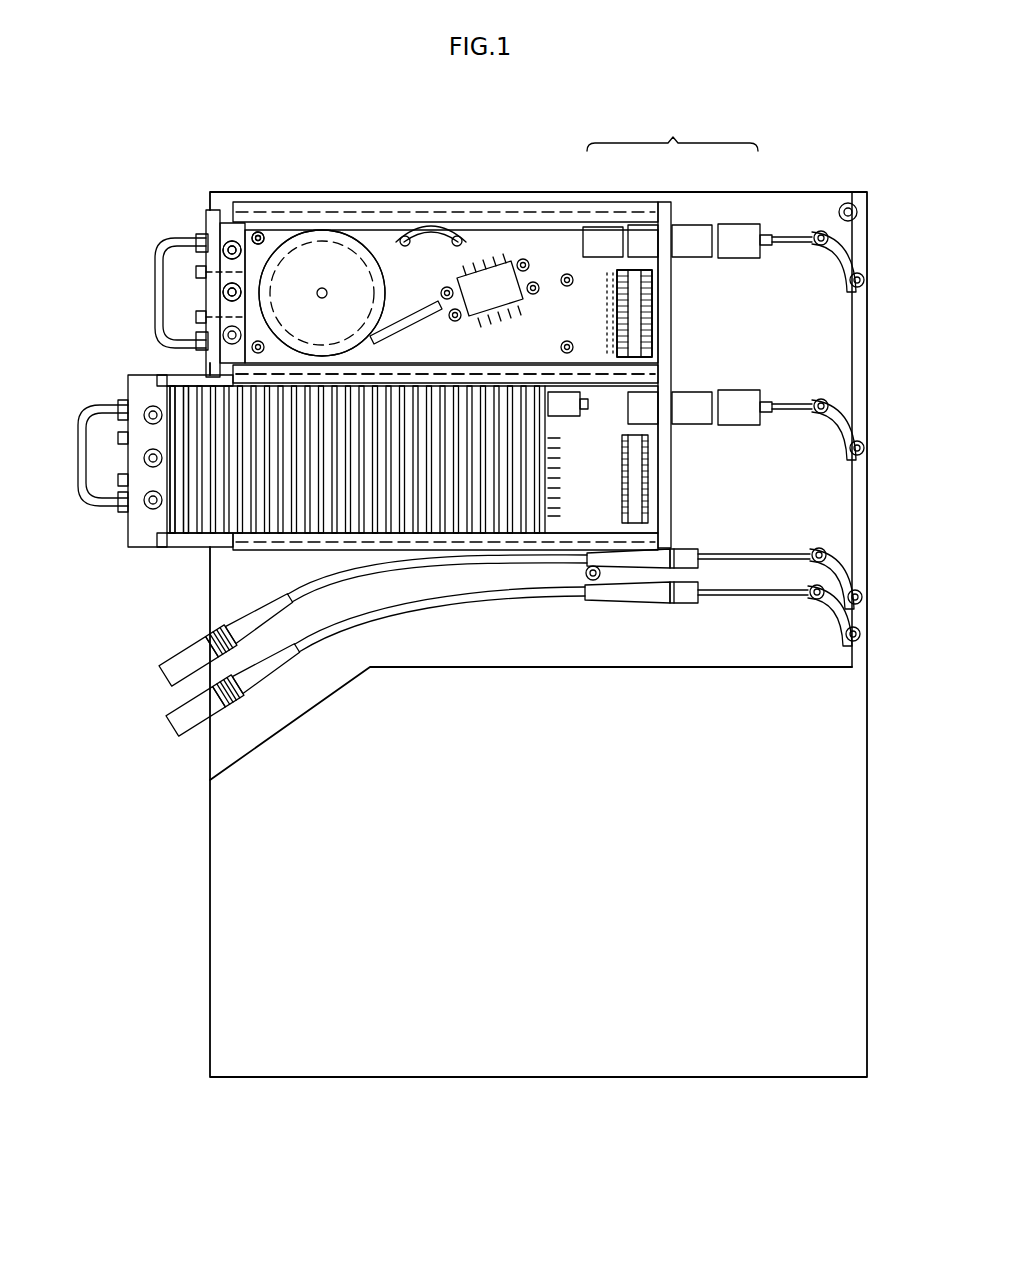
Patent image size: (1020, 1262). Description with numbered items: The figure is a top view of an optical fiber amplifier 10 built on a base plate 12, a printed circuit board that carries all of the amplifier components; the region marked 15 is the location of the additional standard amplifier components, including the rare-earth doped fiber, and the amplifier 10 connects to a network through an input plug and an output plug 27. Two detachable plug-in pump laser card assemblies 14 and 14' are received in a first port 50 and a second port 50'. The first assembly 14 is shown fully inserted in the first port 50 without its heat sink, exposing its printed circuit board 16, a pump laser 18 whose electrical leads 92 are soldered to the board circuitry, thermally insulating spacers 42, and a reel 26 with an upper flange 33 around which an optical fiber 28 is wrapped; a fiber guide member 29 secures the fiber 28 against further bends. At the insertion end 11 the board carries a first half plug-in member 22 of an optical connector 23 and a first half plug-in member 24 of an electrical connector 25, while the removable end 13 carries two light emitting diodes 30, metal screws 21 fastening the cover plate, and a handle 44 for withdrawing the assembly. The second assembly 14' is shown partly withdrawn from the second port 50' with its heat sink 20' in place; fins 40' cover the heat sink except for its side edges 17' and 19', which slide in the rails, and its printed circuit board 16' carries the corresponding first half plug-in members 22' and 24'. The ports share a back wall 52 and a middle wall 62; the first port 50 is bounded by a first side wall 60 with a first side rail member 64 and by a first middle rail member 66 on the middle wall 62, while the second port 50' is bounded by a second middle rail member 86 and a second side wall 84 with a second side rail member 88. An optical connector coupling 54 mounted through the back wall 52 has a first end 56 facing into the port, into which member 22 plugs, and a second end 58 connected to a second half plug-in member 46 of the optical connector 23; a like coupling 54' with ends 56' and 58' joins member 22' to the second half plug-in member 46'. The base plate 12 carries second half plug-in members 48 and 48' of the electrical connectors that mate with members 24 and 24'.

The optical fiber amplifier 10 is at (797, 152).
The insertion end 11 is at (640, 352).
The base plate 12 is at (210, 940).
The removable end 13 is at (206, 225).
The detachable plug-in pump laser card assembly 14 is at (156, 290).
The second detachable plug-in pump laser card assembly 14' is at (69, 438).
The location of additional standard amplifier components 15 is at (531, 788).
The printed circuit board 16 is at (451, 296).
The printed circuit board 16' is at (601, 459).
The side edge 17' is at (169, 356).
The pump laser 18 is at (490, 288).
The side edge 19' is at (126, 480).
The heat sink 20' is at (337, 490).
The metal screws 21 is at (243, 292).
The first half plug-in member 22 is at (603, 242).
The first half plug-in member 22' is at (586, 421).
The optical connector 23 is at (672, 132).
The first half plug-in member 24 is at (598, 313).
The first half plug-in member 24' is at (585, 477).
The electrical connector 25 is at (604, 270).
The reel 26 is at (322, 293).
The input plug and output plug 27 is at (167, 690).
The optical fiber 28 is at (390, 332).
The fiber guide member 29 is at (430, 232).
The light emitting diodes 30 is at (196, 316).
The upper flange 33 is at (322, 230).
The fins 40' is at (134, 443).
The thermally insulating spacers 42 is at (258, 232).
The handle 44 is at (155, 305).
The second half plug-in member 46 is at (769, 229).
The second half plug-in member 46' is at (765, 383).
The second half plug-in member 48 is at (672, 313).
The second half plug-in member 48' is at (678, 479).
The first port 50 is at (804, 264).
The second port 50' is at (789, 472).
The back wall 52 is at (672, 538).
The optical connector coupling 54 is at (685, 204).
The optical connector coupling 54' is at (701, 382).
The first end 56 is at (679, 261).
The first end 56' is at (682, 430).
The second end 58 is at (788, 261).
The second end 58' is at (787, 429).
The first side wall 60 is at (507, 204).
The middle wall 62 is at (457, 321).
The first side rail member 64 is at (390, 212).
The first middle rail member 66 is at (487, 376).
The second side wall 84 is at (242, 547).
The second middle rail member 86 is at (293, 378).
The second side rail member 88 is at (298, 545).
The electrical leads 92 is at (505, 310).